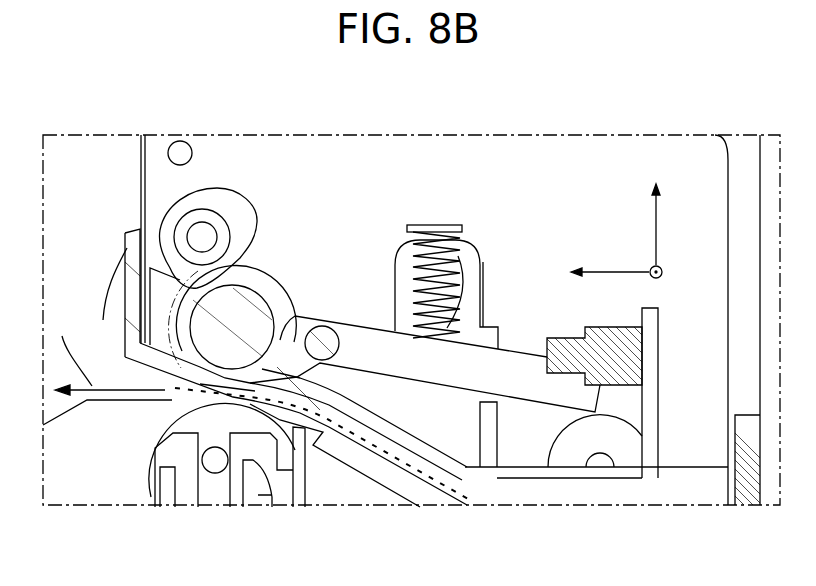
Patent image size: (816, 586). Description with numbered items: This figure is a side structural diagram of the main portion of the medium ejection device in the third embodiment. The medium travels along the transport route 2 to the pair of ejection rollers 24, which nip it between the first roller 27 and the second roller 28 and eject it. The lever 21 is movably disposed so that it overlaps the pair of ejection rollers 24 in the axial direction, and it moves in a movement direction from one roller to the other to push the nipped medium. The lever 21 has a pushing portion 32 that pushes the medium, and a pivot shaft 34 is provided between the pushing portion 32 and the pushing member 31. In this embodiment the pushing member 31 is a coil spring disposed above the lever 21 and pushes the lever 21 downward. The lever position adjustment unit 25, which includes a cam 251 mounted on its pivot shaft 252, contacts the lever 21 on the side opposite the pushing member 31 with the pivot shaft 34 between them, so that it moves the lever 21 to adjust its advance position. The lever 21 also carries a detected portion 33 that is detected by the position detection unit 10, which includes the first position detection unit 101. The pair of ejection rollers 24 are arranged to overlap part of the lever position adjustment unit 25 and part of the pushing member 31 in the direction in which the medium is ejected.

The transport route 2 is at (403, 462).
The position detection unit 10 is at (425, 347).
The first position detection unit 101 is at (615, 363).
The lever 21 is at (117, 400).
The pair of ejection rollers 24 is at (200, 359).
The lever position adjustment unit 25 is at (226, 167).
The cam 251 is at (203, 196).
The pivot shaft 252 is at (208, 237).
The first roller 27 is at (262, 283).
The second roller 28 is at (146, 462).
The pushing member 31 is at (453, 260).
The pushing portion 32 is at (222, 380).
The detected portion 33 is at (446, 397).
The pivot shaft 34 is at (322, 340).